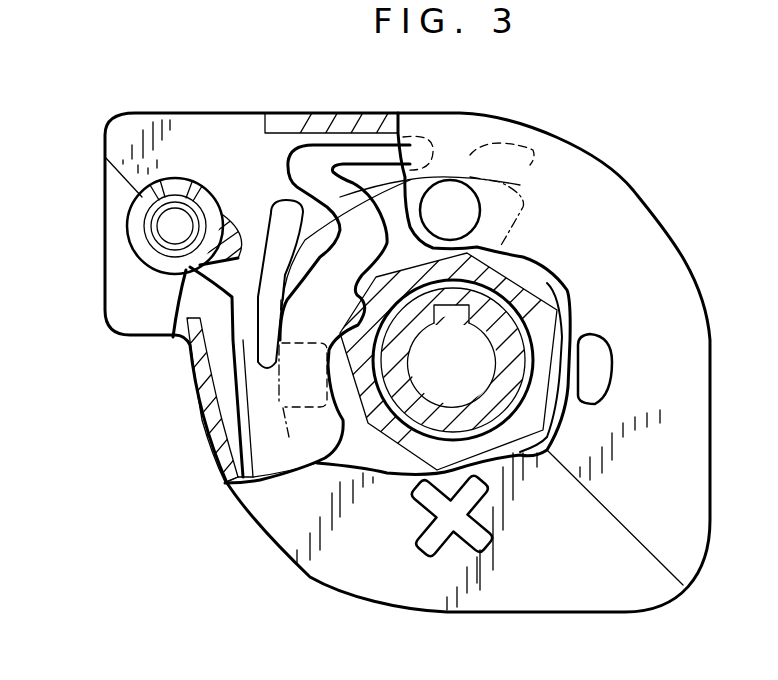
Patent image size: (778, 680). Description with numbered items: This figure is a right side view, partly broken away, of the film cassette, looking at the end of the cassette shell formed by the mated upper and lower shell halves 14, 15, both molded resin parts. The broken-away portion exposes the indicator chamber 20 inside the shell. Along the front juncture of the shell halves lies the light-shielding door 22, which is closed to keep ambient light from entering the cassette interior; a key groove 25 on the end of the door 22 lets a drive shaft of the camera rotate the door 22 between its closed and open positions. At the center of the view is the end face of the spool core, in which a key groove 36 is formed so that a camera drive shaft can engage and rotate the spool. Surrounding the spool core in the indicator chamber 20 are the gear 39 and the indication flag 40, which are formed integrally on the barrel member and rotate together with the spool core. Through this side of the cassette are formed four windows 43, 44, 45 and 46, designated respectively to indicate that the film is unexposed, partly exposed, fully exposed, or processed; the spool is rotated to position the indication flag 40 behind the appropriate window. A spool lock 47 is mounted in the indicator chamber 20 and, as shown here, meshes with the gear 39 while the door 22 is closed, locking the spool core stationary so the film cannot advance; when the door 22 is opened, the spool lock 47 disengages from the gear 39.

The upper shell half 14 is at (585, 160).
The lower shell half 15 is at (287, 538).
The indicator chamber 20 is at (227, 405).
The light-shielding door 22 is at (178, 152).
The key groove 25 is at (165, 226).
The key groove 36 is at (453, 308).
The gear 39 is at (533, 300).
The indication flag 40 is at (523, 207).
The window 43 is at (431, 186).
The window 44 is at (578, 372).
The window 45 is at (433, 530).
The window 46 is at (326, 437).
The spool lock 47 is at (232, 430).